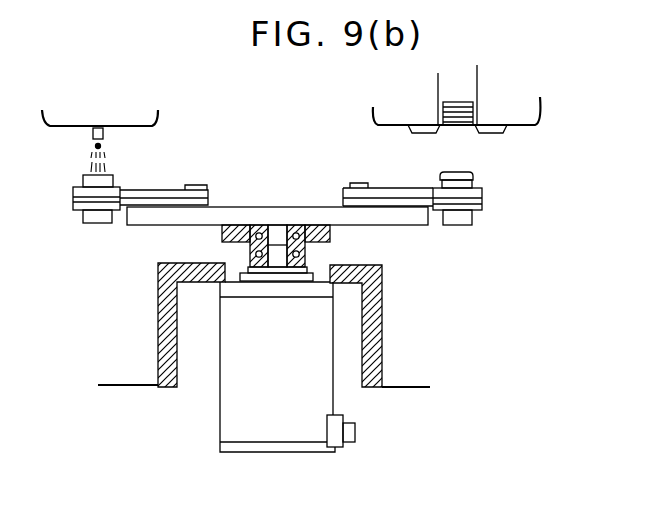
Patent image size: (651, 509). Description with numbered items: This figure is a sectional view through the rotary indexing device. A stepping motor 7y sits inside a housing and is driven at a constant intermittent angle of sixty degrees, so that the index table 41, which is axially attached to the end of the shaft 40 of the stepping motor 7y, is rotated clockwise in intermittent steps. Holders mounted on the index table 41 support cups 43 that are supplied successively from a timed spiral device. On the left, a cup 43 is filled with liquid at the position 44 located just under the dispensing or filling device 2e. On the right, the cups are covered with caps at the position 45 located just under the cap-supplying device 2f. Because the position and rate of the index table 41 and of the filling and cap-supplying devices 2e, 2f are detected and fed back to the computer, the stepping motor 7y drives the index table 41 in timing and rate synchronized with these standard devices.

The dispensing or filling device 2e is at (65, 129).
The filling position 44 is at (104, 156).
The index table 41 is at (155, 217).
The shaft 40 is at (277, 250).
The cap-covering position 45 is at (458, 172).
The cap-supplying device 2f is at (518, 122).
The cup 43 is at (458, 225).
The stepping motor 7y is at (323, 365).